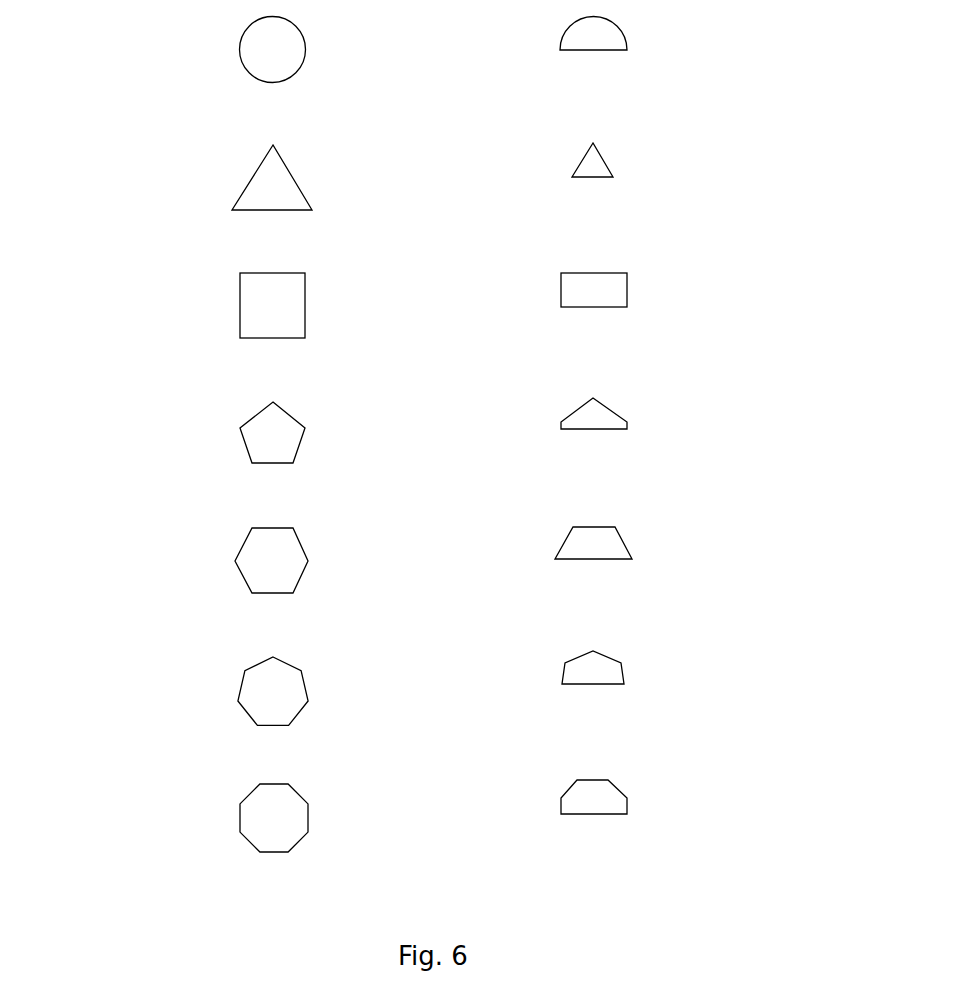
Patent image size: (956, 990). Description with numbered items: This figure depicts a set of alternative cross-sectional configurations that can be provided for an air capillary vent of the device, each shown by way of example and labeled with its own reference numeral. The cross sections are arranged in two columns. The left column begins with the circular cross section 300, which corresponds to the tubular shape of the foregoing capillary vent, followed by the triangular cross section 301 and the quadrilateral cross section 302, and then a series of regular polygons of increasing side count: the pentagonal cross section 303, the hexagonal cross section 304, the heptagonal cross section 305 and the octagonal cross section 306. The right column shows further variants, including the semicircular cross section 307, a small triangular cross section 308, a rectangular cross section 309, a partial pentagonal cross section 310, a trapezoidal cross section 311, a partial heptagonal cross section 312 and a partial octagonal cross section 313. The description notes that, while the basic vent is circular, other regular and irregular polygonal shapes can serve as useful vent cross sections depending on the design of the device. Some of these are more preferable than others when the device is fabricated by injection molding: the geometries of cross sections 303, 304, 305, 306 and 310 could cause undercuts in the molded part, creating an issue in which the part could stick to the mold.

The circular cross section 300 is at (227, 50).
The triangular cross section 301 is at (227, 180).
The quadrilateral cross section 302 is at (227, 307).
The pentagonal cross section 303 is at (227, 430).
The hexagonal cross section 304 is at (223, 561).
The heptagonal cross section 305 is at (225, 692).
The octagonal cross section 306 is at (227, 818).
The semicircular cross section 307 is at (639, 50).
The small triangular cross section 308 is at (639, 180).
The rectangular cross section 309 is at (639, 307).
The partial pentagonal cross section 310 is at (639, 430).
The trapezoidal cross section 311 is at (644, 559).
The partial heptagonal cross section 312 is at (639, 683).
The partial octagonal cross section 313 is at (639, 814).